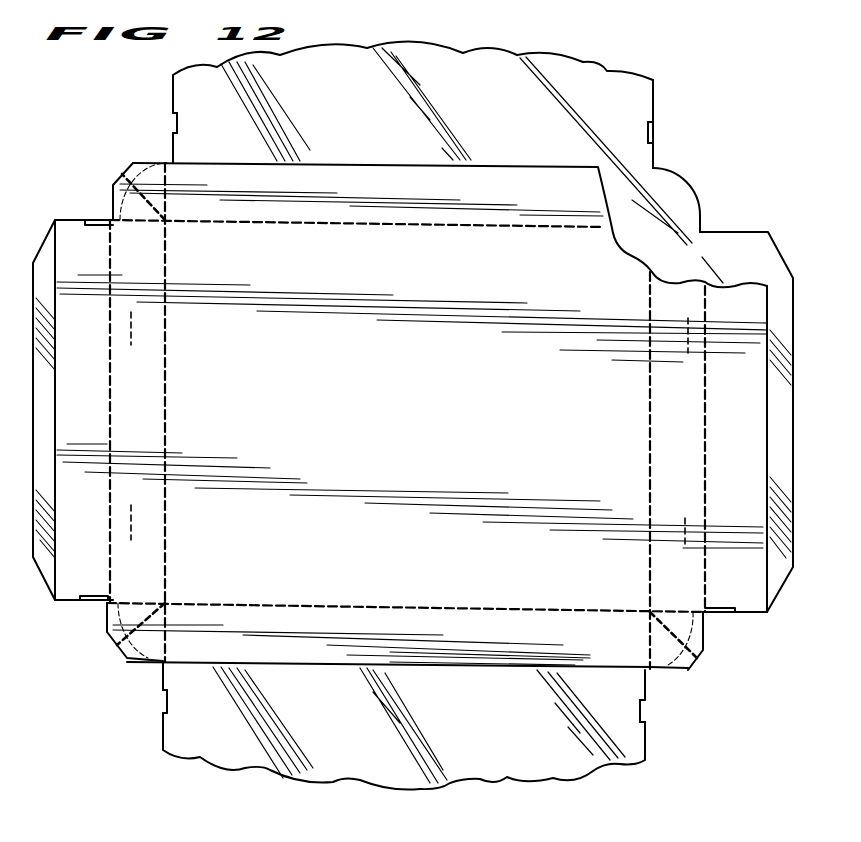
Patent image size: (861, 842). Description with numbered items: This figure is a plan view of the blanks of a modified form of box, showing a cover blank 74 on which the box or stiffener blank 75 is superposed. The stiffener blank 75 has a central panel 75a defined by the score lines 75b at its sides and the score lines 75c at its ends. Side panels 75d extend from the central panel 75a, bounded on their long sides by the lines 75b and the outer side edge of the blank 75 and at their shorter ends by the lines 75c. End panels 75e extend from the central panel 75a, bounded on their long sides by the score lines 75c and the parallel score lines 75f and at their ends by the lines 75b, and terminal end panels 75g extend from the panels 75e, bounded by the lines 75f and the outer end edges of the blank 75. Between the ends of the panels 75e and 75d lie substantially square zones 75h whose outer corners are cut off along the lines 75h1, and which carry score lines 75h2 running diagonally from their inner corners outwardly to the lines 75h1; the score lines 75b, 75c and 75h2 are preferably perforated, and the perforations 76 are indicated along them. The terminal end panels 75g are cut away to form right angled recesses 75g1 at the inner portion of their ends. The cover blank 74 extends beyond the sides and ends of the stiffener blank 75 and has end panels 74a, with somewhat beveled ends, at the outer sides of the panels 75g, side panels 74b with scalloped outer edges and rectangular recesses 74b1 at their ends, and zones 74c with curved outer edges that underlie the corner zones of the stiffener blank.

The cover blank 74 is at (656, 149).
The end panel 74a is at (783, 263).
The side panel 74b is at (310, 75).
The rectangular recess 74b1 is at (173, 118).
The zone with curved outer edge 74c is at (688, 190).
The box or stiffener blank 75 is at (395, 145).
The central panel 75a is at (373, 476).
The score line 75b is at (432, 228).
The score line 75c is at (166, 436).
The side panel 75d is at (463, 182).
The end panel 75e is at (157, 380).
The score line 75f is at (110, 510).
The terminal end panel 75g is at (70, 262).
The right angled recess 75g1 is at (97, 218).
The zone 75h is at (113, 185).
The line 75h1 is at (128, 170).
The score line 75h2 is at (132, 222).
The perforation slit 76 is at (130, 518).